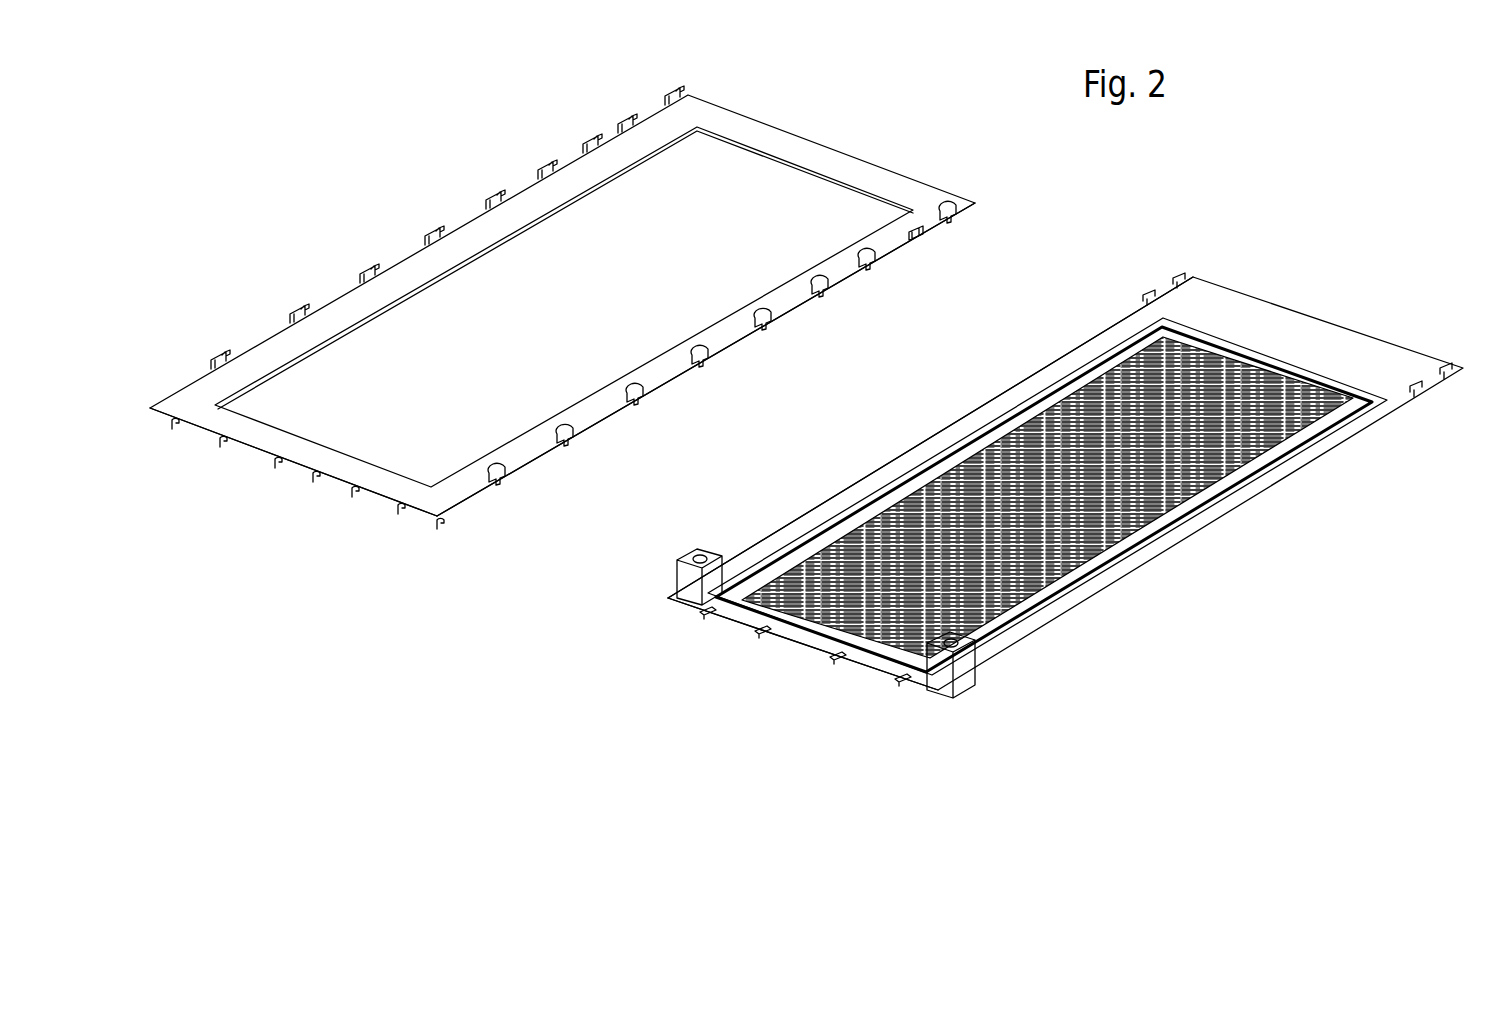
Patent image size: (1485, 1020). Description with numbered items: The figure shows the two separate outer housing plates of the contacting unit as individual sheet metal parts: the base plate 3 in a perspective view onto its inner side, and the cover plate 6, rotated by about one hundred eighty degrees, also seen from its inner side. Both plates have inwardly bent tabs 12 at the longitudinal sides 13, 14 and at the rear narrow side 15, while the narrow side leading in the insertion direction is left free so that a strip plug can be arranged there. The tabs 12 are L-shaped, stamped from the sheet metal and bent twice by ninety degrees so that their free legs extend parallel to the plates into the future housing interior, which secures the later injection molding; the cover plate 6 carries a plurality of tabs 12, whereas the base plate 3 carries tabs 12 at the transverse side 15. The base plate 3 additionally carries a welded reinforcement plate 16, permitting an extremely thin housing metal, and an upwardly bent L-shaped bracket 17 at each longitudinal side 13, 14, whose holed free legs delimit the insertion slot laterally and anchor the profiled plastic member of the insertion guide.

The base plate 3 is at (1242, 310).
The cover plate 6 is at (745, 180).
The tabs 12 is at (828, 285).
The longitudinal side 13 is at (458, 219).
The longitudinal side 14 is at (693, 380).
The rear narrow side 15 is at (330, 470).
The reinforcement plate 16 is at (1125, 415).
The bracket 17 is at (688, 573).